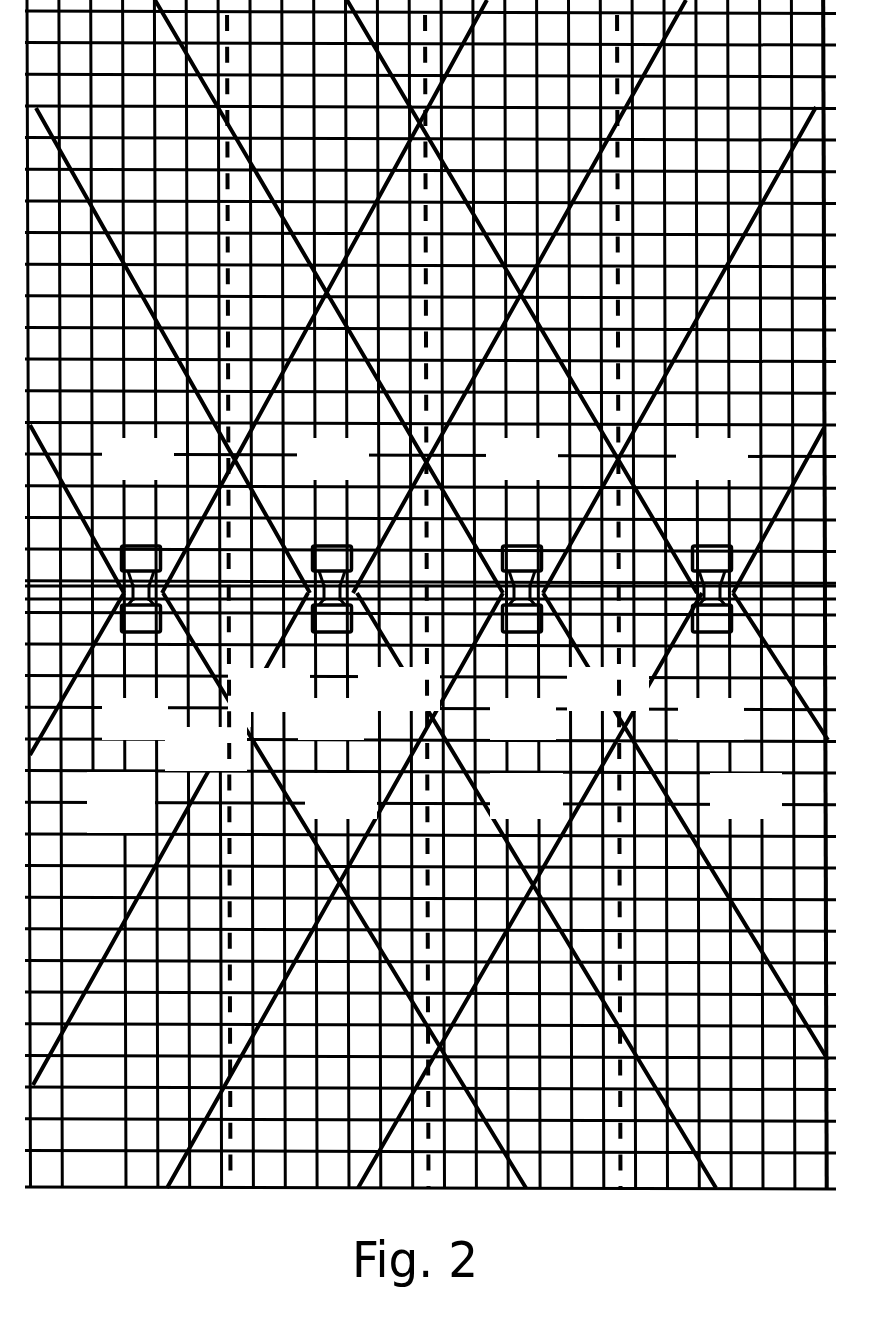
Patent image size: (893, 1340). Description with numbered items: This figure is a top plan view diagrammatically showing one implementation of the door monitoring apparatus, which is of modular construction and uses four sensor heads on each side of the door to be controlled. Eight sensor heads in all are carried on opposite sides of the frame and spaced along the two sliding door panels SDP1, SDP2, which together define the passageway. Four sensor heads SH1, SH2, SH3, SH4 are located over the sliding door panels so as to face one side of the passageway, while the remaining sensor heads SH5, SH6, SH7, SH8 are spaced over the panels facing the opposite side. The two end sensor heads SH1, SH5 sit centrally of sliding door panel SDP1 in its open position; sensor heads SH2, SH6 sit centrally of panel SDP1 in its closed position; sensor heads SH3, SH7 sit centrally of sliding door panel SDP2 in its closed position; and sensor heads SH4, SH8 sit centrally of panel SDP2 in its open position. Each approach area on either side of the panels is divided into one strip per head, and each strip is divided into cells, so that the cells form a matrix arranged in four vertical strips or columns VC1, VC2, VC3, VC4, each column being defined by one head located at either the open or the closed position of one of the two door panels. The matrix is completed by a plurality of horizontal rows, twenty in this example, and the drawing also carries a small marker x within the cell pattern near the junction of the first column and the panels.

The sensor head SH1 is at (142, 632).
The sensor head SH2 is at (333, 632).
The sensor head SH3 is at (523, 632).
The sensor head SH4 is at (712, 633).
The sensor head SH5 is at (142, 547).
The sensor head SH6 is at (333, 547).
The sensor head SH7 is at (523, 547).
The sensor head SH8 is at (715, 547).
The sliding door panel SDP1 is at (190, 599).
The sliding door panel SDP2 is at (606, 667).
The vertical column VC1 is at (161, 594).
The vertical column VC2 is at (371, 594).
The vertical column VC3 is at (560, 594).
The vertical column VC4 is at (772, 594).
The crossing point x is at (241, 716).